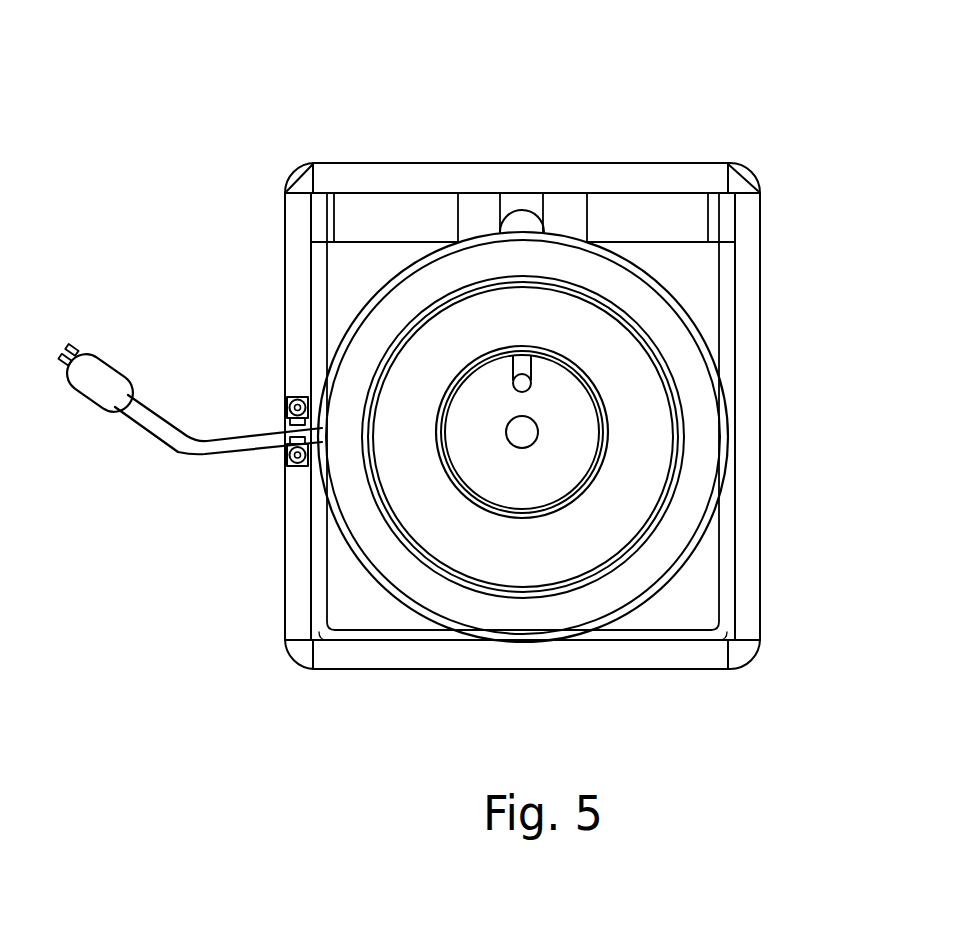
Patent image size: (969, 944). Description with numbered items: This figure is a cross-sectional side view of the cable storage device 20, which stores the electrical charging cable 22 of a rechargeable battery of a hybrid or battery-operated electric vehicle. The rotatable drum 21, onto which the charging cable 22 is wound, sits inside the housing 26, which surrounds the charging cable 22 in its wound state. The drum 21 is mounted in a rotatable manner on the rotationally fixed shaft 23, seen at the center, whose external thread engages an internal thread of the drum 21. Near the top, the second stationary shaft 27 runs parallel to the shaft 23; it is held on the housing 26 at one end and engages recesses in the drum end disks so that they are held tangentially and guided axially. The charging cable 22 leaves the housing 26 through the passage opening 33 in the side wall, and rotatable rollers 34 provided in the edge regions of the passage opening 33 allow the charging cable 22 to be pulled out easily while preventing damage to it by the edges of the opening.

The cable storage device 20 is at (780, 104).
The rotatable drum 21 is at (604, 530).
The electrical charging cable 22 is at (177, 455).
The rotationally fixed shaft 23 is at (517, 477).
The housing 26 is at (744, 546).
The second stationary shaft 27 is at (522, 212).
The passage opening 33 is at (284, 408).
The rotatable rollers 34 is at (284, 466).